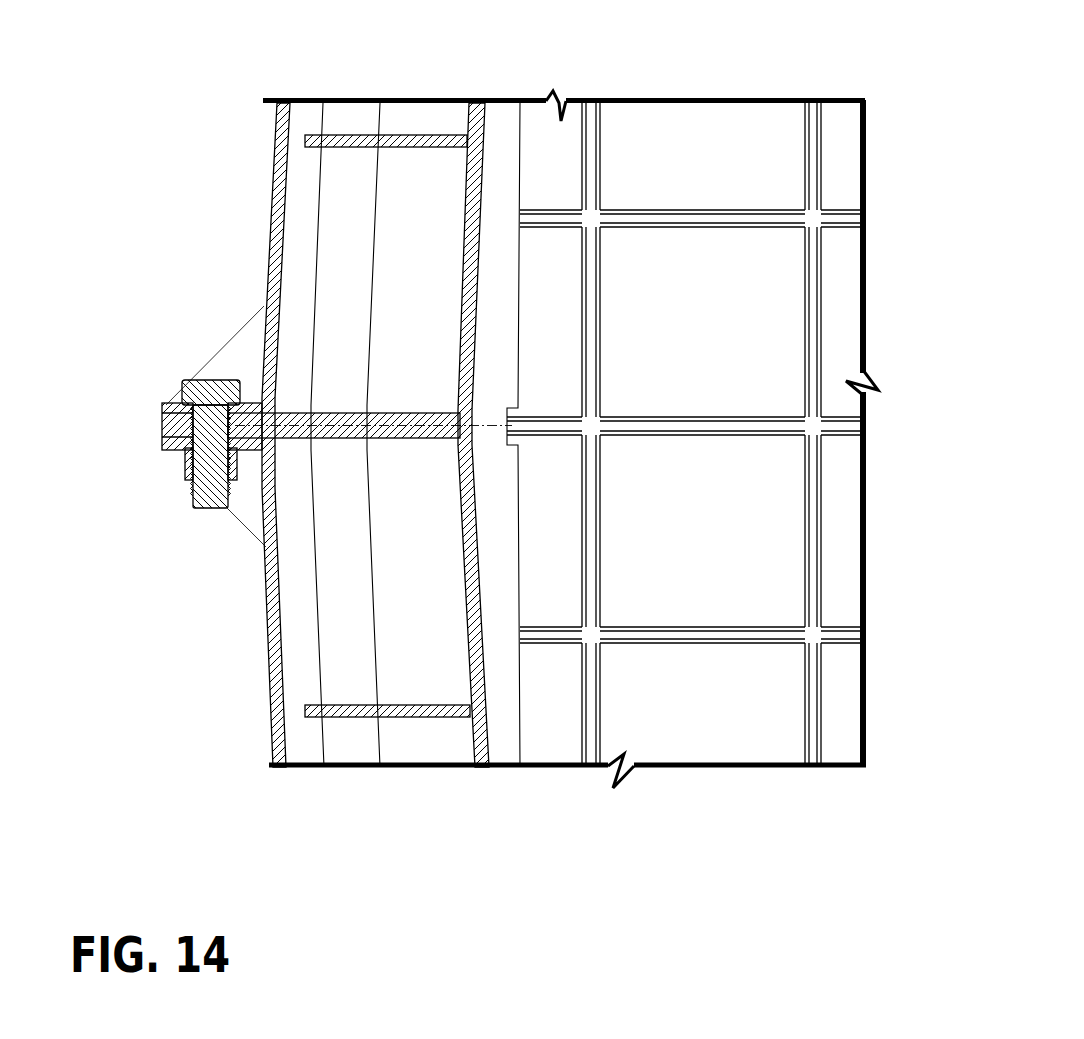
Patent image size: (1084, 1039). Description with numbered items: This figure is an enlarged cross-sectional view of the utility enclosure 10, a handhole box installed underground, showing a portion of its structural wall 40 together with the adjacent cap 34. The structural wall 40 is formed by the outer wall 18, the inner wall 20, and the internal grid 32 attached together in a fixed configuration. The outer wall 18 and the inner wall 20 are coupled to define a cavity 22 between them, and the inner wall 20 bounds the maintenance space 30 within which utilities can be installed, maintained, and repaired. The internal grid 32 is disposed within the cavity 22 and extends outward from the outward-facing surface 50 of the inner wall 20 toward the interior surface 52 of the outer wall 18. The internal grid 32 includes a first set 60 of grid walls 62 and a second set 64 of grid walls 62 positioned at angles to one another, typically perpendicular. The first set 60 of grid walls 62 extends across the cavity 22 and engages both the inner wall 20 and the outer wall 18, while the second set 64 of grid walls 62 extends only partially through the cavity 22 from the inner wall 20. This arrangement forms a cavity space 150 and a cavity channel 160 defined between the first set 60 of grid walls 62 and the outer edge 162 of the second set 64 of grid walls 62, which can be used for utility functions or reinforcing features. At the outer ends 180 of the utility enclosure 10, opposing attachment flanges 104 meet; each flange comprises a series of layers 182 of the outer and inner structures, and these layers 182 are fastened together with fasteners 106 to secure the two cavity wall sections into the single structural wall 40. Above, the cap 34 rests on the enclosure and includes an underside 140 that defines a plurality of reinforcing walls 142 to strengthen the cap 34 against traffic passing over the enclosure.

The utility enclosure 10 is at (146, 198).
The outer wall 18 is at (272, 655).
The inner wall 20 is at (489, 746).
The cavity 22 is at (312, 552).
The maintenance space 30 is at (669, 676).
The internal grid 32 is at (358, 744).
The cap 34 is at (834, 502).
The structural wall 40 is at (262, 150).
The outward-facing surface 50 is at (473, 196).
The interior surface 52 is at (288, 248).
The first set of grid walls 60 is at (345, 133).
The grid walls 62 is at (443, 136).
The second set of grid walls 64 is at (420, 743).
The attachment flanges 104 is at (170, 389).
The fasteners 106 is at (197, 495).
The underside 140 is at (769, 595).
The reinforcing walls 142 is at (722, 642).
The cavity space 150 is at (422, 215).
The cavity channel 160 is at (312, 692).
The outer edge 162 is at (373, 597).
The outer ends 180 is at (253, 397).
The layers 182 is at (162, 425).